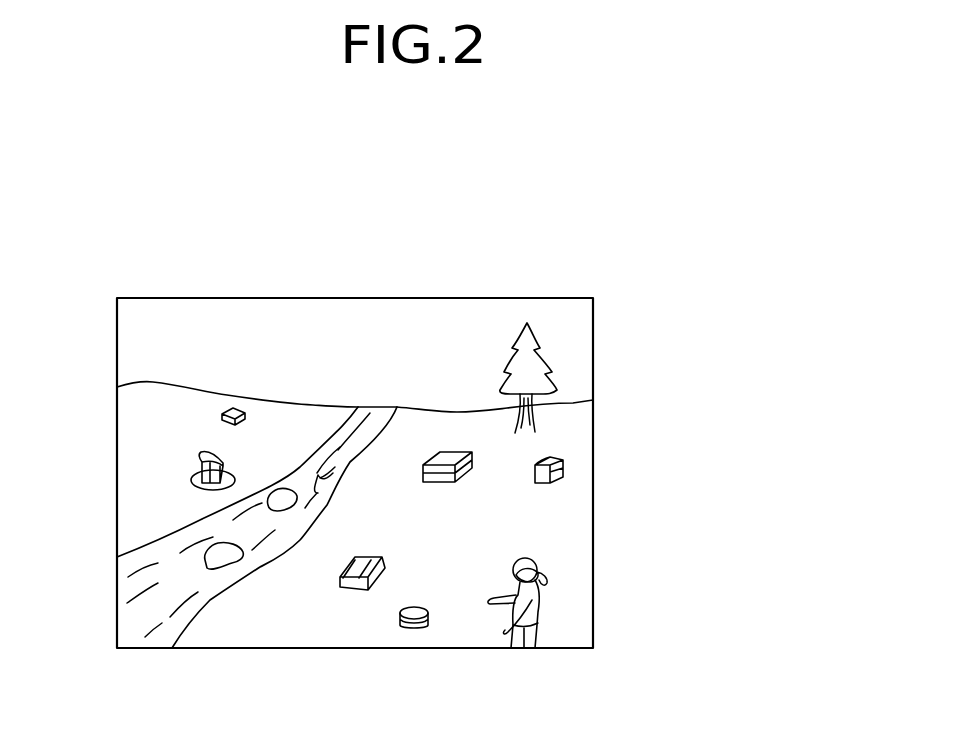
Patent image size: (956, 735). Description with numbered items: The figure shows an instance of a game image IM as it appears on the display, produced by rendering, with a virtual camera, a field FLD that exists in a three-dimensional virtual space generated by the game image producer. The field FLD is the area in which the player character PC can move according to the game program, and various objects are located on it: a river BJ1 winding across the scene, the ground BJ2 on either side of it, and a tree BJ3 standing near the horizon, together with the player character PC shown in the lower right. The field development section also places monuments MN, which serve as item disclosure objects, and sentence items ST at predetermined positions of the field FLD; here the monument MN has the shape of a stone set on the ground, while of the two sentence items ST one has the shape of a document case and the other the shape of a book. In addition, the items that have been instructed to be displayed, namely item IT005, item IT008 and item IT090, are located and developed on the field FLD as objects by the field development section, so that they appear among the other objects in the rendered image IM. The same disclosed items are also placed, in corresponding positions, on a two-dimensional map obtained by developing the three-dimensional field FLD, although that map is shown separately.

The game image IM is at (487, 295).
The field FLD is at (311, 308).
The river BJ1 is at (380, 408).
The ground BJ2 is at (135, 510).
The tree BJ3 is at (540, 348).
The monument MN is at (200, 455).
The item IT005 is at (228, 405).
The item IT008 is at (563, 463).
The item IT090 is at (420, 630).
The sentence item ST is at (473, 458).
The player character PC is at (540, 608).